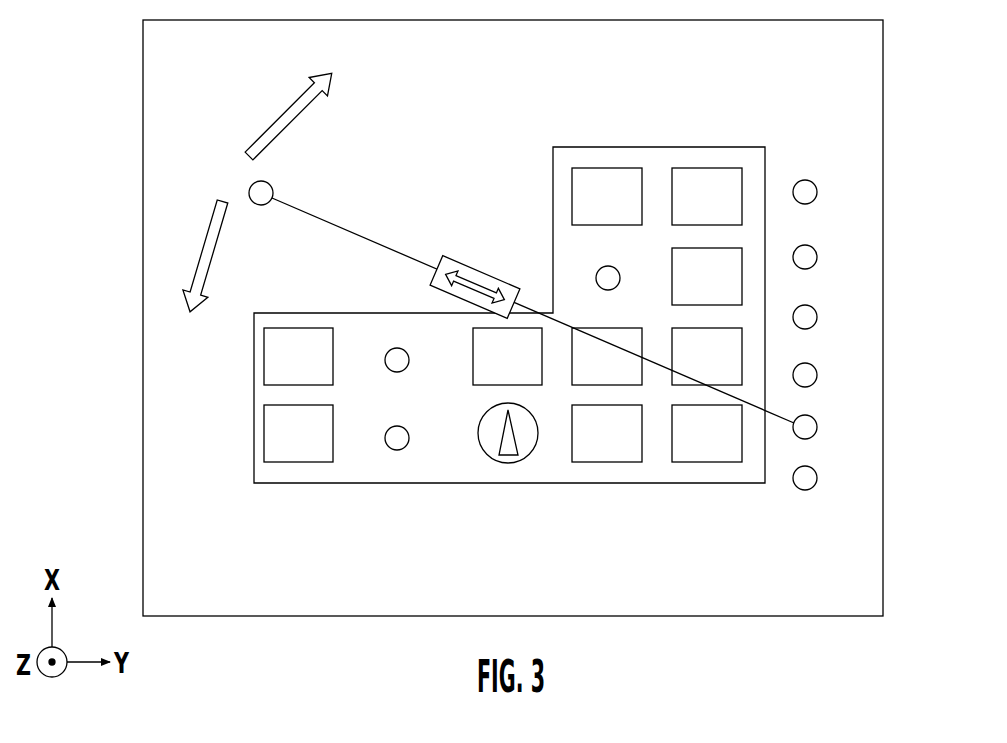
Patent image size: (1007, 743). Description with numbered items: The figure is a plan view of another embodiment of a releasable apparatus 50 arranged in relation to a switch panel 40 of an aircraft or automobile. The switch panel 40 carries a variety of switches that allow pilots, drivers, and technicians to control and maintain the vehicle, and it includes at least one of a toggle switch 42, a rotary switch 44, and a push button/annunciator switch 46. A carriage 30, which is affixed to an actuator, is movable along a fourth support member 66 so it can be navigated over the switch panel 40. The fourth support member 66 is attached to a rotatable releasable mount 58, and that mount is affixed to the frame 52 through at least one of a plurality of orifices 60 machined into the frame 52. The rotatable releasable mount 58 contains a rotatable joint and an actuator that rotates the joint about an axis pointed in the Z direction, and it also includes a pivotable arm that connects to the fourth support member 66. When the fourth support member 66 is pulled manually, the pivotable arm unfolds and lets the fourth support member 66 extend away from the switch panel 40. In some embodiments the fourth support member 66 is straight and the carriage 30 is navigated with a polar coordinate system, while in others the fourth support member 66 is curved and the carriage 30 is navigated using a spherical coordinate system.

The carriage 30 is at (480, 270).
The switch panel 40 is at (254, 408).
The toggle switch 42 is at (396, 450).
The rotary switch 44 is at (505, 463).
The push button/annunciator switch 46 is at (703, 463).
The releasable apparatus 50 is at (118, 282).
The frame 52 is at (883, 552).
The rotatable releasable mount 58 is at (817, 430).
The orifices 60 is at (817, 374).
The fourth support member 66 is at (368, 242).